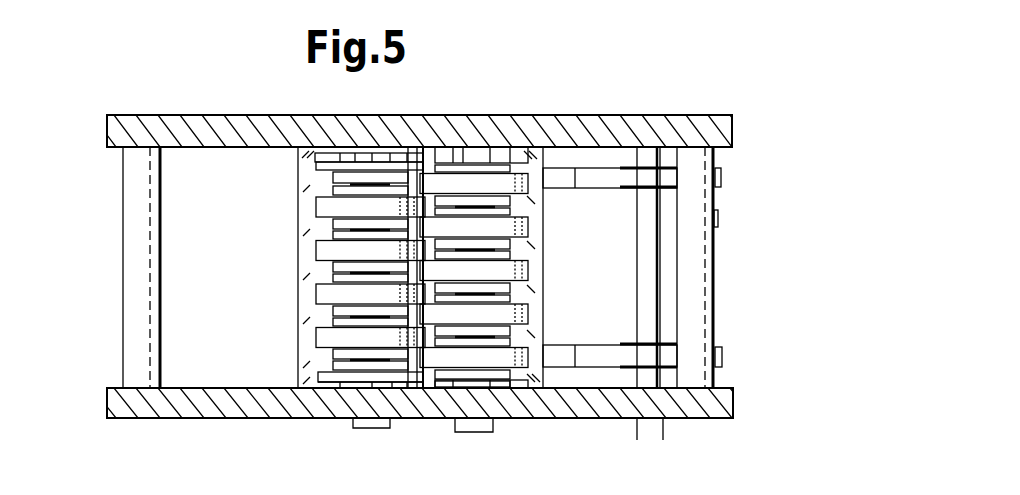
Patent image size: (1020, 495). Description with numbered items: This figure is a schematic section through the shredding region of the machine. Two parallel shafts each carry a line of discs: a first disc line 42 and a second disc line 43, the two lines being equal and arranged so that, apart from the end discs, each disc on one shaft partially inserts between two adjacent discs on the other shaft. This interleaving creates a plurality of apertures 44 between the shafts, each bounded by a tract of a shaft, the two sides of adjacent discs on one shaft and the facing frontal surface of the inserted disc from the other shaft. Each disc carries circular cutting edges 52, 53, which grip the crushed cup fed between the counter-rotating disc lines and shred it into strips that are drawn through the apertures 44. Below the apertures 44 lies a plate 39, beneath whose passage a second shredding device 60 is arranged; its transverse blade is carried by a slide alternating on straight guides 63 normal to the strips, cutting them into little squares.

The plate 39 is at (308, 364).
The first disc line 42 is at (318, 293).
The second disc line 43 is at (505, 180).
The apertures 44 is at (410, 353).
The cutting edges 52 is at (322, 325).
The circular cutting edges 53 is at (523, 293).
The second shredding device 60 is at (722, 215).
The straight guides 63 is at (613, 172).